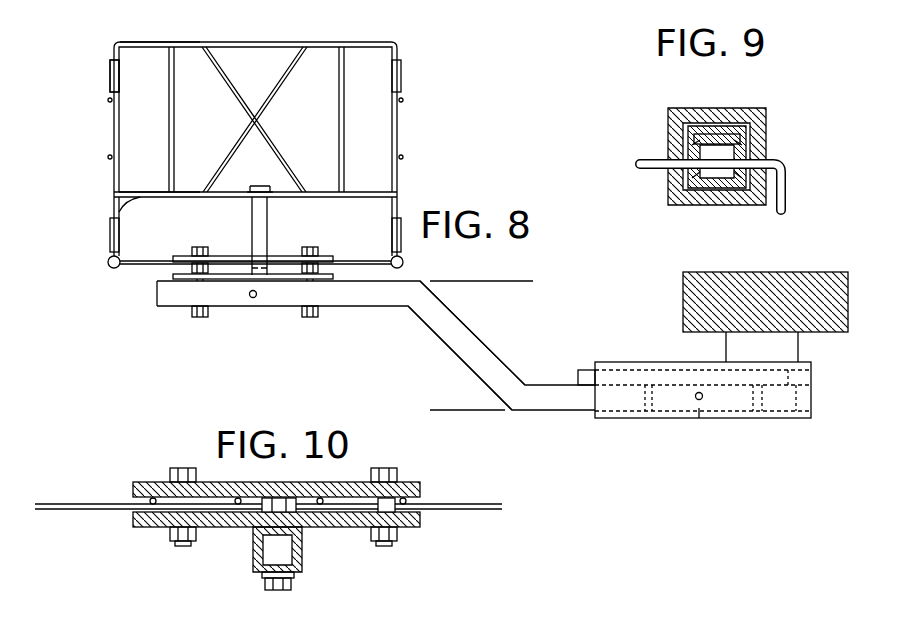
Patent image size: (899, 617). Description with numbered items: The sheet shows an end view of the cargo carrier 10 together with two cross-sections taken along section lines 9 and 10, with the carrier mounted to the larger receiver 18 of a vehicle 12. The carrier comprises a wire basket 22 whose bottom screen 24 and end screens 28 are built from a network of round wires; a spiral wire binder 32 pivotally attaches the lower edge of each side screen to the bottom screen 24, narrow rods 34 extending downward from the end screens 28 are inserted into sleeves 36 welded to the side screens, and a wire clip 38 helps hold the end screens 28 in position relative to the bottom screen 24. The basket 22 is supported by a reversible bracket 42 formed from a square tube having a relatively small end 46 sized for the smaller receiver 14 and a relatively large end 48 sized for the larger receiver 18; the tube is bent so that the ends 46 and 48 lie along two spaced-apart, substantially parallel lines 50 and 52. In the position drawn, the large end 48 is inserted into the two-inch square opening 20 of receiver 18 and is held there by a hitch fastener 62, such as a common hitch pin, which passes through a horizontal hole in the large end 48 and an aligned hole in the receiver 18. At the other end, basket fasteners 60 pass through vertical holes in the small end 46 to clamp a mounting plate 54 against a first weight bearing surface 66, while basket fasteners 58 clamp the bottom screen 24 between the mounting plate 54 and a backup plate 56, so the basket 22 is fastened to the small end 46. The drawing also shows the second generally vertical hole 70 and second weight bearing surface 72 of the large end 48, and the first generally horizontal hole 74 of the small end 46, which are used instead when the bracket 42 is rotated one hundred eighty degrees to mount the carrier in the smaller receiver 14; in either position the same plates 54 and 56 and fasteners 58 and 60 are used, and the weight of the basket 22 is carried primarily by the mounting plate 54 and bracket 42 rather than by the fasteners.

In FIG. 8, the section line 9- 9 is at (699, 375).
In FIG. 8, the cargo carrier 10 is at (228, 245).
In FIG. 8, the vehicle 12 is at (683, 282).
In FIG. 8, the receiver 14 is at (585, 370).
In FIG. 8, the receiver 18 is at (766, 420).
In FIG. 9, the receiver 18 is at (766, 128).
In FIG. 8, the square opening 20 is at (625, 405).
In FIG. 9, the square opening 20 is at (714, 128).
In FIG. 8, the wire basket 22 is at (400, 58).
In FIG. 8, the bottom screen 24 is at (135, 268).
In FIG. 10, the bottom screen 24 is at (100, 512).
In FIG. 8, the end screen 28 is at (140, 45).
In FIG. 8, the spiral wire binder 32 is at (108, 262).
In FIG. 8, the narrow rod 34 is at (140, 197).
In FIG. 8, the sleeve 36 is at (110, 78).
In FIG. 8, the wire clip 38 is at (280, 193).
In FIG. 8, the reversible bracket 42 is at (428, 333).
In FIG. 8, the small end 46 is at (157, 293).
In FIG. 10, the small end 46 is at (302, 556).
In FIG. 8, the large end 48 is at (796, 397).
In FIG. 9, the large end 48 is at (684, 135).
In FIG. 8, the line 50 is at (525, 283).
In FIG. 8, the line 52 is at (460, 409).
In FIG. 8, the mounting plate 54 is at (328, 280).
In FIG. 10, the mounting plate 54 is at (415, 528).
In FIG. 8, the backup plate 56 is at (328, 257).
In FIG. 10, the backup plate 56 is at (145, 482).
In FIG. 8, the basket fastener 58 is at (198, 247).
In FIG. 10, the basket fastener 58 is at (180, 547).
In FIG. 8, the basket fastener 60 is at (197, 318).
In FIG. 10, the basket fastener 60 is at (262, 582).
In FIG. 8, the hitch fastener 62 is at (703, 396).
In FIG. 9, the hitch fastener 62 is at (788, 180).
In FIG. 8, the first weight bearing surface 66 is at (268, 270).
In FIG. 8, the second generally vertical hole 70 is at (765, 403).
In FIG. 8, the second weight bearing surface 72 is at (718, 418).
In FIG. 8, the first generally horizontal hole 74 is at (254, 298).